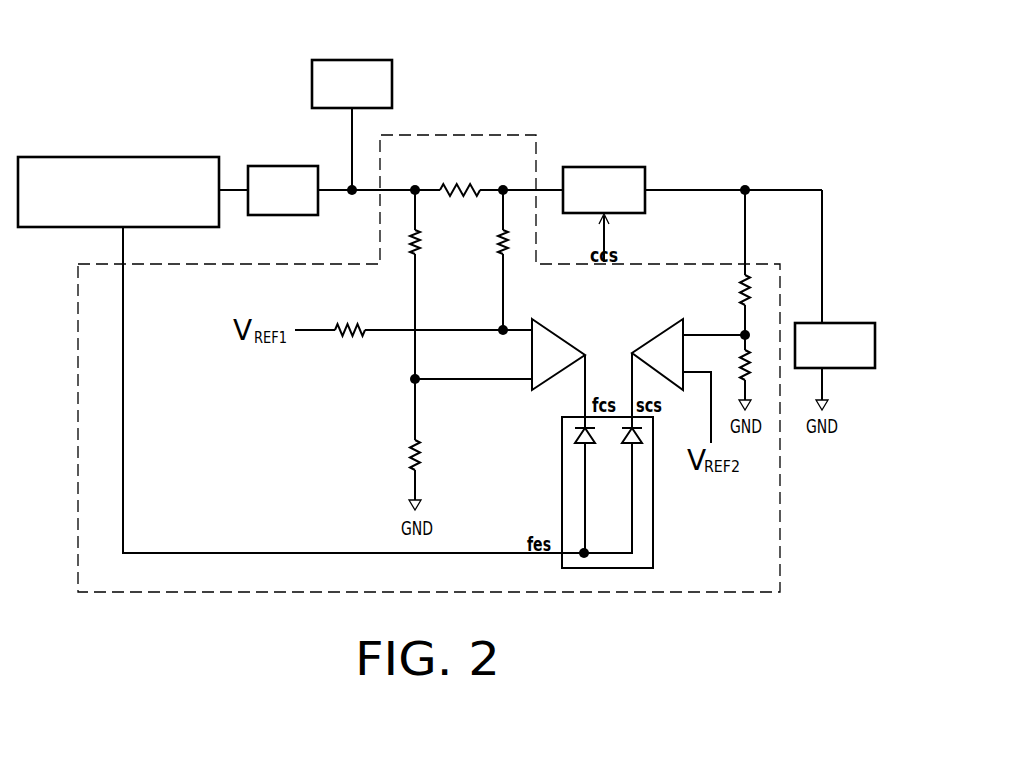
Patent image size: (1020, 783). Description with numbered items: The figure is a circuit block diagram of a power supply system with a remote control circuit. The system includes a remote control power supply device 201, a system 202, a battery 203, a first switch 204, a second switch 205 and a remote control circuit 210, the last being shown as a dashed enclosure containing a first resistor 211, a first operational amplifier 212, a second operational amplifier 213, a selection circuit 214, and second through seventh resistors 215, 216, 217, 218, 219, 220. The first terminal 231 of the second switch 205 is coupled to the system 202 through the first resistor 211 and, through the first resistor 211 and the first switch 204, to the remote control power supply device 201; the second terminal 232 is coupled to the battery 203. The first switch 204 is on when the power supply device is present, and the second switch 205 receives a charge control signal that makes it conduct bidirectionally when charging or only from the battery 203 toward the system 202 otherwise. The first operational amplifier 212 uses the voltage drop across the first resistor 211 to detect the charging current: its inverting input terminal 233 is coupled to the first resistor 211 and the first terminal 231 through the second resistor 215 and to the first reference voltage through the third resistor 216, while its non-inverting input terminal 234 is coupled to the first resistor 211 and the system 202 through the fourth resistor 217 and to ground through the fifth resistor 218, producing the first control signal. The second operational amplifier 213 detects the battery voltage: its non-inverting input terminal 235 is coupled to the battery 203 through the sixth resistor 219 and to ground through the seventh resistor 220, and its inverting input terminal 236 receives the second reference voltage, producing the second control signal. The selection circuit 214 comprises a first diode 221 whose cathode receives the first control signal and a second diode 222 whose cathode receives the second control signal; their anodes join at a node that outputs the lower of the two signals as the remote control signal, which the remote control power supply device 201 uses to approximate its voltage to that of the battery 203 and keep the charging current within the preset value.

The remote control power supply device 201 is at (153, 157).
The system 202 is at (352, 60).
The battery 203 is at (877, 343).
The first switch 204 is at (285, 166).
The second switch 205 is at (613, 167).
The remote control circuit 210 is at (686, 592).
The first resistor 211 is at (455, 188).
The first operational amplifier 212 is at (565, 340).
The second operational amplifier 213 is at (658, 322).
The selection circuit 214 is at (600, 570).
The second resistor 215 is at (496, 248).
The third resistor 216 is at (343, 340).
The fourth resistor 217 is at (420, 238).
The fifth resistor 218 is at (407, 455).
The sixth resistor 219 is at (751, 282).
The seventh resistor 220 is at (752, 360).
The first diode 221 is at (578, 452).
The second diode 222 is at (637, 450).
The first terminal 231 is at (551, 188).
The second terminal 232 is at (668, 189).
The inverting input terminal 233 is at (523, 325).
The non-inverting input terminal 234 is at (527, 382).
The non-inverting input terminal 235 is at (724, 334).
The inverting input terminal 236 is at (698, 375).